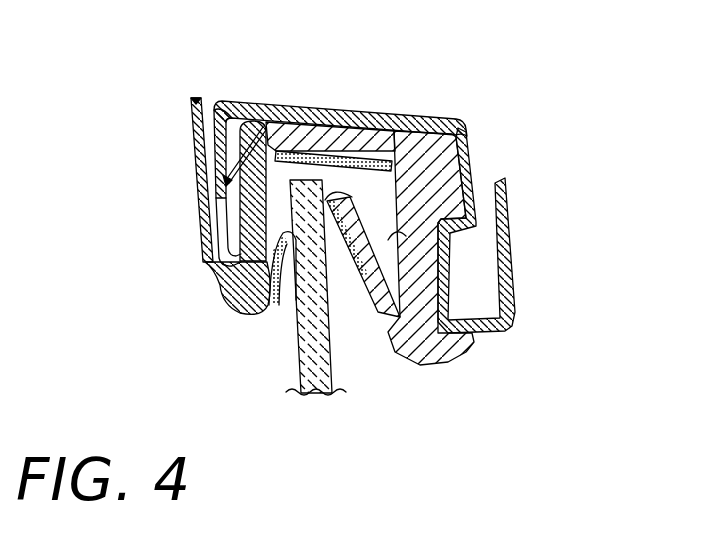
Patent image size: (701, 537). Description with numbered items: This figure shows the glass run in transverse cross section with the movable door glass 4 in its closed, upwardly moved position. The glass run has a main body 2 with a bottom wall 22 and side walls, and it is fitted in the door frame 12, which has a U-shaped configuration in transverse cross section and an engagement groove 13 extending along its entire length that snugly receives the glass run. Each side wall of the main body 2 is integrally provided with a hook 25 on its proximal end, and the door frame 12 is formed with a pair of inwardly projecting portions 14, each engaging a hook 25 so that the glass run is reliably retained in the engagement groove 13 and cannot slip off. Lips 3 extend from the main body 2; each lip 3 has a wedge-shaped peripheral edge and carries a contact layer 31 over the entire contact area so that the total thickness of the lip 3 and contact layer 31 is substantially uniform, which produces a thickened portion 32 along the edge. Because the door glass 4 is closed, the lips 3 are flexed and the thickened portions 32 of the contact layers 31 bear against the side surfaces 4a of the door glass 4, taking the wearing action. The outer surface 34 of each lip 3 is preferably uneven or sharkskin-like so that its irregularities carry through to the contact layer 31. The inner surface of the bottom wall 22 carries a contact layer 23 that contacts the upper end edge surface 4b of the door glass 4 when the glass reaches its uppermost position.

The main body 2 is at (383, 123).
The lip 3 is at (388, 268).
The movable door glass 4 is at (322, 395).
The side surface 4a is at (328, 110).
The upper end edge surface 4b is at (270, 112).
The door frame 12 is at (437, 125).
The engagement groove 13 is at (442, 158).
The inwardly projecting portion 14 is at (213, 225).
The bottom wall 22 is at (297, 110).
The contact layer 23 is at (364, 150).
The hook 25 is at (193, 140).
The contact layer 31 is at (290, 302).
The thickened portion 32 is at (262, 304).
The outer surface 34 is at (400, 236).